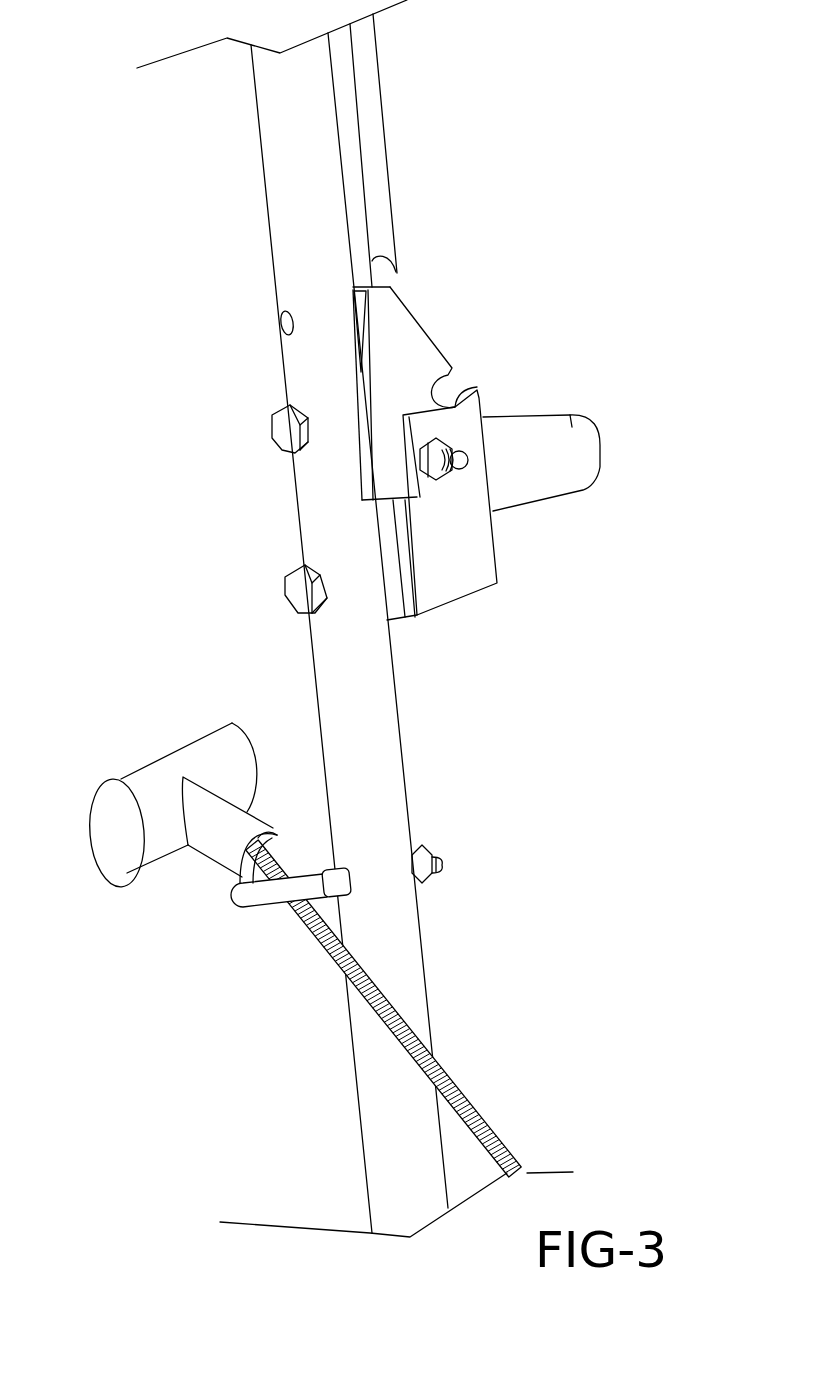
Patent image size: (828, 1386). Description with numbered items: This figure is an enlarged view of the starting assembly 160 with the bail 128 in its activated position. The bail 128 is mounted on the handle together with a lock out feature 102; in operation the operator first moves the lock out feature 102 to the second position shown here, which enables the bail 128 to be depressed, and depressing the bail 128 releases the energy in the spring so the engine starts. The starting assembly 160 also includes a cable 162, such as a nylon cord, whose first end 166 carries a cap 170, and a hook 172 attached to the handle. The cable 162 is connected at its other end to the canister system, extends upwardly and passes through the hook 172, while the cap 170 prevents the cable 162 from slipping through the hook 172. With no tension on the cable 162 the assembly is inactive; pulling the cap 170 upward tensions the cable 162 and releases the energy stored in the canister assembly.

The lock out feature 102 is at (570, 427).
The bail 128 is at (375, 201).
The starting assembly 160 is at (150, 699).
The cable 162 is at (468, 1098).
The first end 166 is at (277, 837).
The cap 170 is at (103, 828).
The hook 172 is at (253, 897).